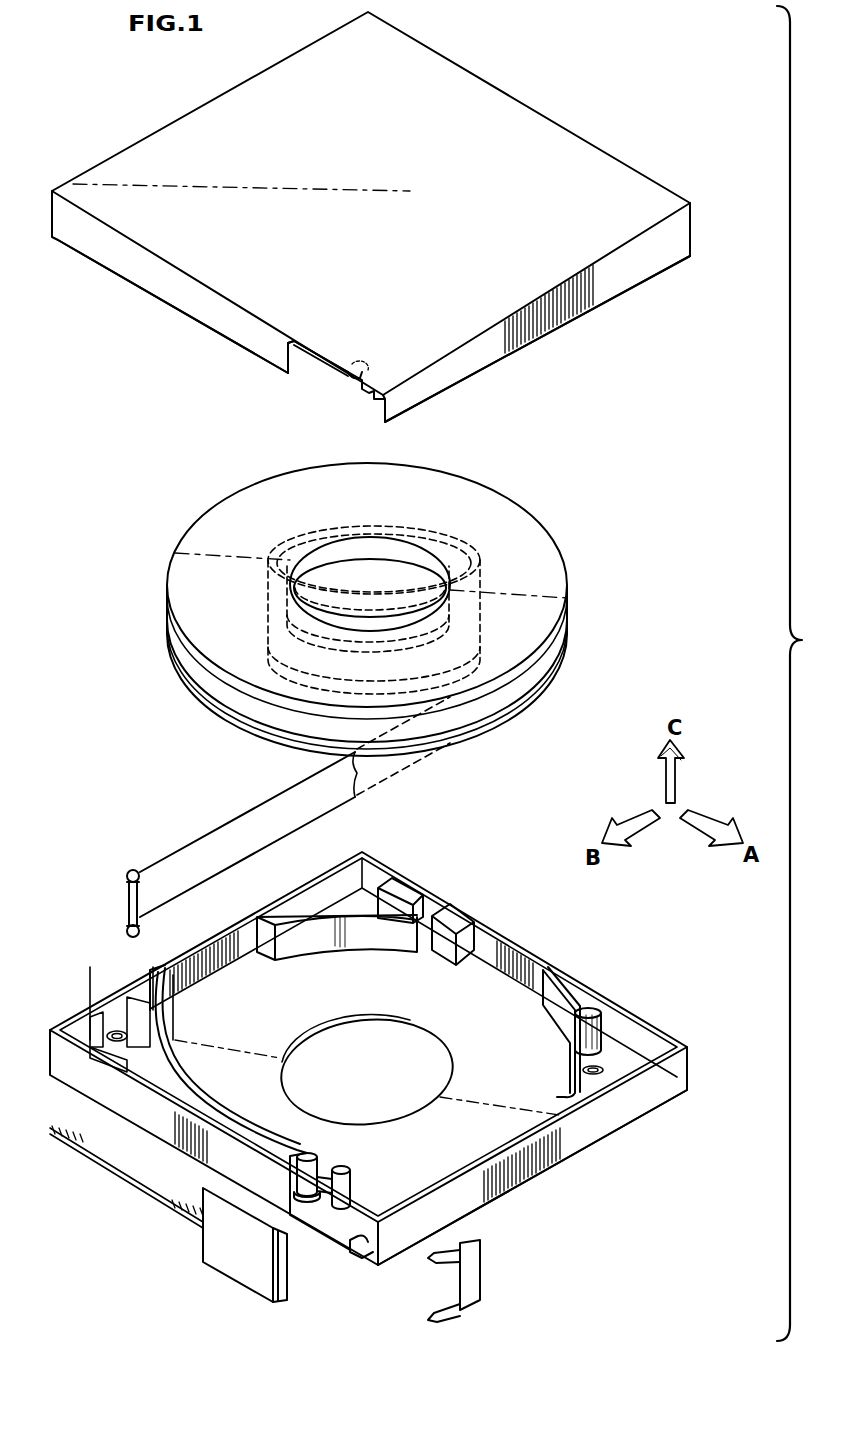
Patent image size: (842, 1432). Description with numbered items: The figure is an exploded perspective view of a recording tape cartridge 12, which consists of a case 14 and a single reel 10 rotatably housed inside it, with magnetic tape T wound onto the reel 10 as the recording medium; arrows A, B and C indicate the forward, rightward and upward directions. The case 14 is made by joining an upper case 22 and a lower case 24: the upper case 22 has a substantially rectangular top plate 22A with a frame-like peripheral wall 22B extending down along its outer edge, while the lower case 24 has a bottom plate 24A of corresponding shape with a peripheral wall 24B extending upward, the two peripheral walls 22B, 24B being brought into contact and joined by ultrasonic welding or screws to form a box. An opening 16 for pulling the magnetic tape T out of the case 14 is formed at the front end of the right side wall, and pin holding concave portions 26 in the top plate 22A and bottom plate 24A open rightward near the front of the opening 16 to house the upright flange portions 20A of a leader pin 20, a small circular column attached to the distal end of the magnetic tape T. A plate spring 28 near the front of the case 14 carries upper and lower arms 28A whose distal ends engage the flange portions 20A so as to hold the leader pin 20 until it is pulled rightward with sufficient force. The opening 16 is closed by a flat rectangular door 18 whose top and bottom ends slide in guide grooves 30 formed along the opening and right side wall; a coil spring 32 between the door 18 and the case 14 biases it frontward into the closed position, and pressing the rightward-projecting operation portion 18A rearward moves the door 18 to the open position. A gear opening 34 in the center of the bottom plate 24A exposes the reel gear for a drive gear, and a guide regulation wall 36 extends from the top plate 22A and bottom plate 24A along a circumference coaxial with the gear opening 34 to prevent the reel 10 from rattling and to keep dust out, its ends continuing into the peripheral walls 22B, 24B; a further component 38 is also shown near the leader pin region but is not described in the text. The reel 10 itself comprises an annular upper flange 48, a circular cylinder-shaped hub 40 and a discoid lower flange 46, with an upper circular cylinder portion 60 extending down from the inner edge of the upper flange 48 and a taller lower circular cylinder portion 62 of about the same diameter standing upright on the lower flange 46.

The reel 10 is at (545, 512).
The recording tape cartridge 12 is at (80, 432).
The case 14 is at (372, 665).
The opening 16 is at (310, 368).
The door 18 is at (233, 1257).
The operation portion 18A is at (270, 1278).
The leader pin 20 is at (128, 892).
The flange portions 20A is at (135, 871).
The upper case 22 is at (590, 128).
The top plate 22A is at (440, 313).
The peripheral wall 22B is at (613, 277).
The lower case 24 is at (565, 960).
The bottom plate 24A is at (467, 987).
The peripheral wall 24B is at (587, 1132).
The pin holding concave portions 26 is at (342, 376).
The plate spring 28 is at (485, 1266).
The arms 28A is at (447, 1310).
The guide grooves 30 is at (343, 1215).
The coil spring 32 is at (73, 1150).
The gear opening 34 is at (388, 1079).
The guide regulation wall 36 is at (293, 943).
The leader pin holding member 38 is at (120, 1008).
The hub 40 is at (565, 600).
The lower flange 46 is at (562, 643).
The upper flange 48 is at (538, 553).
The upper circular cylinder portion 60 is at (395, 550).
The lower circular cylinder portion 62 is at (410, 575).
The magnetic tape T is at (380, 763).